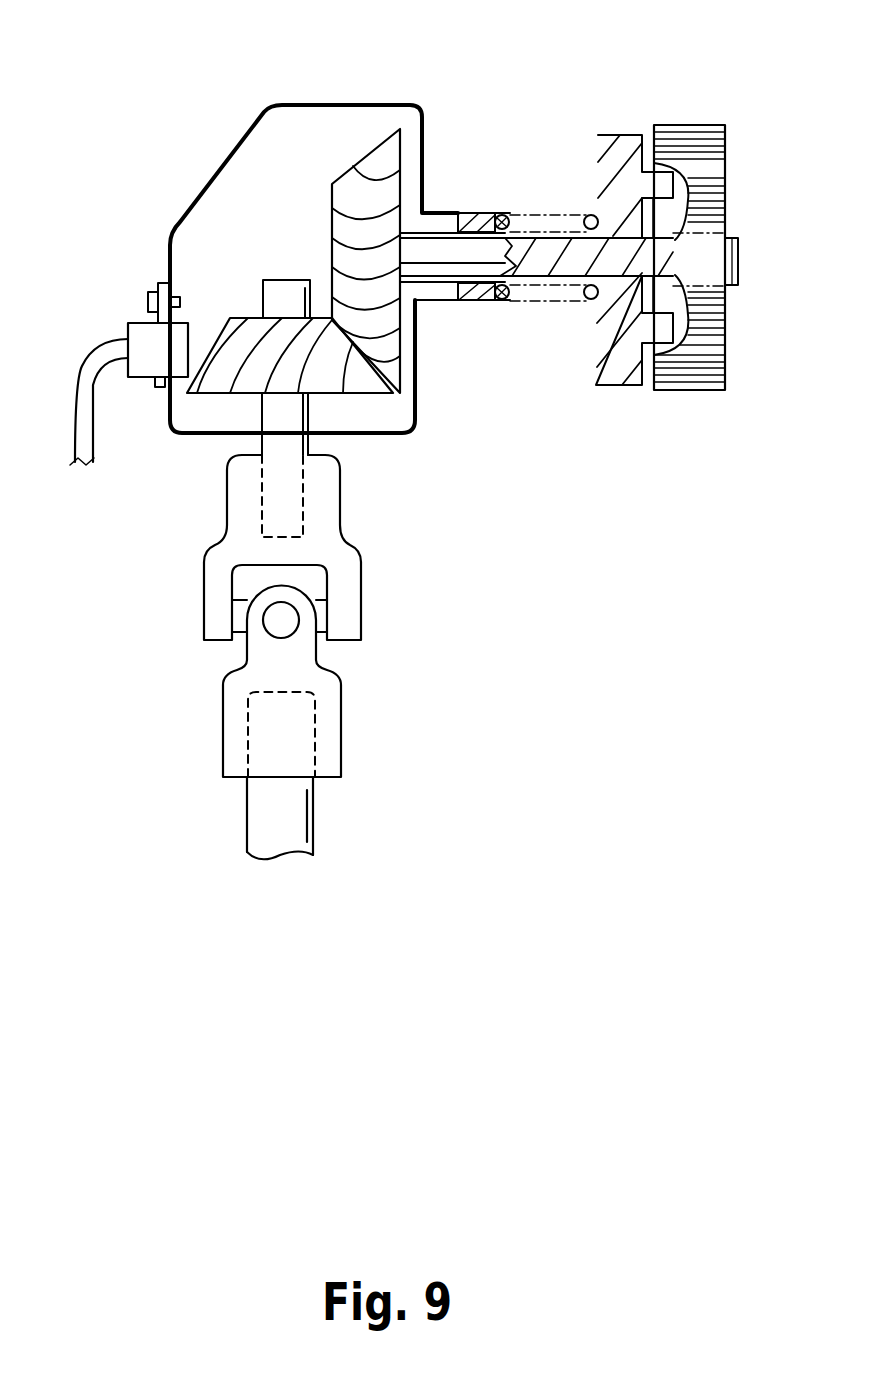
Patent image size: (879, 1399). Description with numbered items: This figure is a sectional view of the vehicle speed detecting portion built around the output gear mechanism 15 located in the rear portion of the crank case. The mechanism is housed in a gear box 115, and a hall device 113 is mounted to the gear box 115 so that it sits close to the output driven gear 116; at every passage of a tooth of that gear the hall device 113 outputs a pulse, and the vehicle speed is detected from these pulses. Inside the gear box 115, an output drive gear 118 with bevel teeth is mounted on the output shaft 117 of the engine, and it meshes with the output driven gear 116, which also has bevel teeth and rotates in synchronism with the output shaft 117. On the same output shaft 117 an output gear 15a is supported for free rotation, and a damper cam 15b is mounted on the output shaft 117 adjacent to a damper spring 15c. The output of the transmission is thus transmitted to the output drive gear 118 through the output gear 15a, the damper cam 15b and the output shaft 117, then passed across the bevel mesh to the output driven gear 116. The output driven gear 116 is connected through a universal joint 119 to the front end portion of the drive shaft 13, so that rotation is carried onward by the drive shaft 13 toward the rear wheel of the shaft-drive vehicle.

The output gear mechanism 15 is at (434, 88).
The output gear 15a is at (685, 126).
The damper cam 15b is at (613, 135).
The damper spring 15c is at (548, 216).
The hall device 113 is at (130, 323).
The gear box 115 is at (205, 188).
The output driven gear 116 is at (225, 318).
The output shaft 117 is at (552, 265).
The output drive gear 118 is at (347, 172).
The universal joint 119 is at (354, 562).
The drive shaft 13 is at (300, 810).